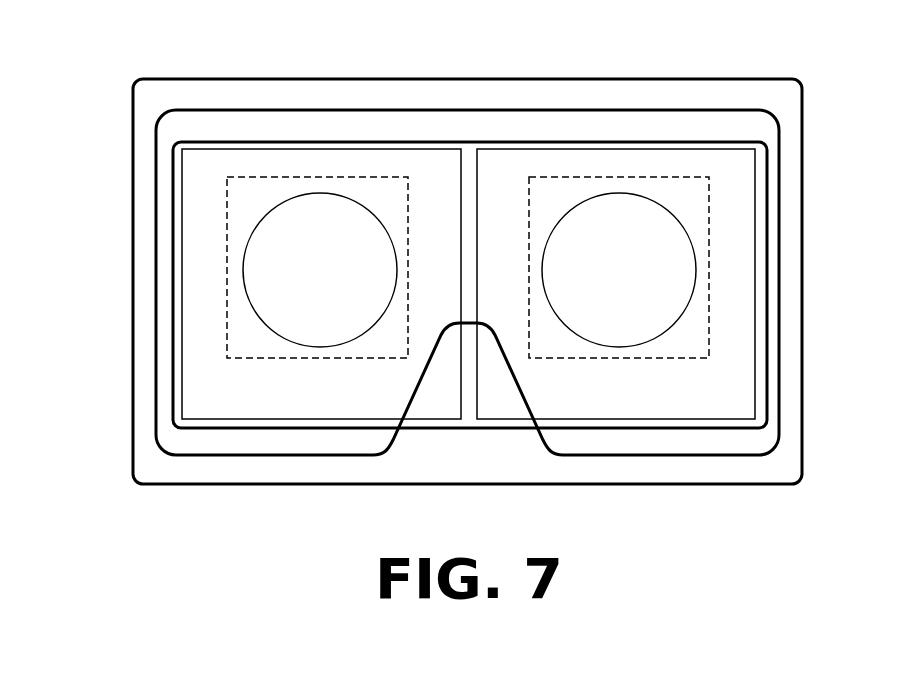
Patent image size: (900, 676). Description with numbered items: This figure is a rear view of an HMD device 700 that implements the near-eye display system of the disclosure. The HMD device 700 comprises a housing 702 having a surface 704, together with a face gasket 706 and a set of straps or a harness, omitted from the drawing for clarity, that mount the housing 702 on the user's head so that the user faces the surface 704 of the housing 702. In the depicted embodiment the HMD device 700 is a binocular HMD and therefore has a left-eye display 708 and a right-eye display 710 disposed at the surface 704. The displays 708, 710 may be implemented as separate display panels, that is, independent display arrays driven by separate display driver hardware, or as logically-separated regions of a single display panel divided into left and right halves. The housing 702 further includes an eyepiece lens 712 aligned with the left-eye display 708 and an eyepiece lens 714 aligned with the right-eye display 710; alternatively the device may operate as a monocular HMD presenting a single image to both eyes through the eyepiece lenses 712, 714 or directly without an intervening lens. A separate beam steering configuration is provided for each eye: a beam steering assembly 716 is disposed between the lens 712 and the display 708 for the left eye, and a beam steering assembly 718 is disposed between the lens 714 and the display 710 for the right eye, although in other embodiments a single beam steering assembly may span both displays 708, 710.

The HMD device 700 is at (614, 80).
The housing 702 is at (803, 251).
The surface 704 is at (195, 470).
The face gasket 706 is at (350, 457).
The left-eye display 708 is at (433, 408).
The right-eye display 710 is at (500, 408).
The eyepiece lens 712 is at (397, 273).
The eyepiece lens 714 is at (542, 273).
The beam steering assembly 716 is at (409, 195).
The beam steering assembly 718 is at (529, 195).